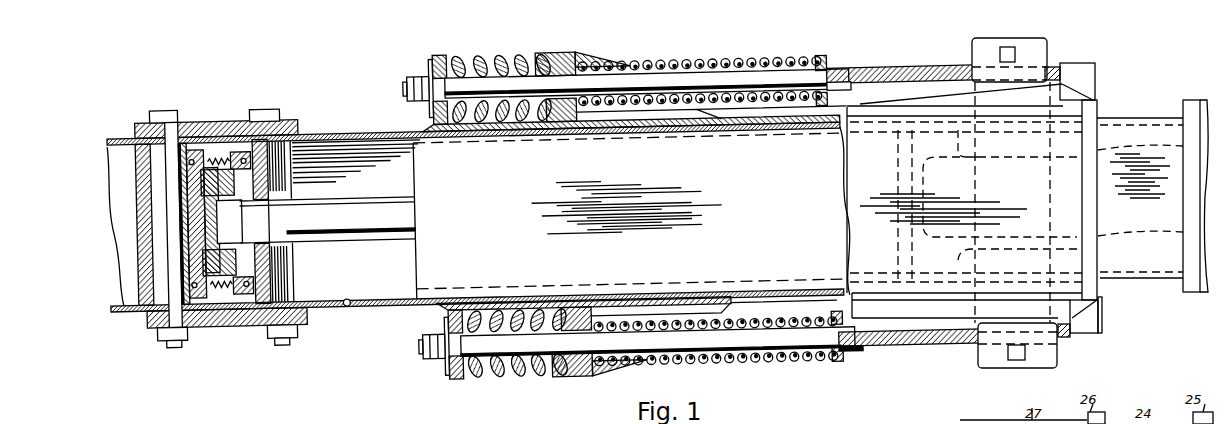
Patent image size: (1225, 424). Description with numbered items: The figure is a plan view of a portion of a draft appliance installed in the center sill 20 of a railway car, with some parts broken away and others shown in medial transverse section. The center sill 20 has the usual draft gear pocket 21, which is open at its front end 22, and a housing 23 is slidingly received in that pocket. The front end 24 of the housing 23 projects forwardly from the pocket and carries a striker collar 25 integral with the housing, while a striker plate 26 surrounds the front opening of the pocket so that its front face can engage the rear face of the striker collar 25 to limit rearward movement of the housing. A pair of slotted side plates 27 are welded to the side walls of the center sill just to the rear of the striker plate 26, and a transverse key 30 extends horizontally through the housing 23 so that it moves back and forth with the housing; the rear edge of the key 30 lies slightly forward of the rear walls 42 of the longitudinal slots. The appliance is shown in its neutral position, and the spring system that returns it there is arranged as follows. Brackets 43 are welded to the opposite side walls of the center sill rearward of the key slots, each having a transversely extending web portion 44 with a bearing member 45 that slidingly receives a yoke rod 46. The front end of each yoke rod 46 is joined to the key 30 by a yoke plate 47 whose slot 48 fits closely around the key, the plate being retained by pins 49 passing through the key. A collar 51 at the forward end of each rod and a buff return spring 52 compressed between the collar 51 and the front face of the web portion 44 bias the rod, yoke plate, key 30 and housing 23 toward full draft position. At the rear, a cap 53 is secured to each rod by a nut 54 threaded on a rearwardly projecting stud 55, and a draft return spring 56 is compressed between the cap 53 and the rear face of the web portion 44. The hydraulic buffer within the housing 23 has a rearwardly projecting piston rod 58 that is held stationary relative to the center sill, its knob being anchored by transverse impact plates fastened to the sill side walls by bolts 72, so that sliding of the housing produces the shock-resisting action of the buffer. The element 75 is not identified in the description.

The center sill 20 is at (346, 140).
The draft gear pocket 21 is at (345, 312).
The front end 22 is at (1102, 289).
The housing 23 is at (413, 268).
The front end 24 is at (1147, 118).
The striker collar 25 is at (1202, 293).
The striker plate 26 is at (1100, 113).
The slotted side plates 27 is at (1068, 108).
The transverse key 30 is at (987, 369).
The rear walls 42 is at (897, 121).
The brackets 43 is at (580, 73).
The web portion 44 is at (628, 370).
The bearing member 45 is at (557, 386).
The yoke rod 46 is at (665, 377).
The yoke plate 47 is at (920, 364).
The slot 48 is at (977, 346).
The pins 49 is at (1007, 47).
The collar 51 is at (838, 378).
The buff return spring 52 is at (708, 374).
The cap 53 is at (456, 392).
The nut 54 is at (437, 371).
The stud 55 is at (419, 354).
The draft return spring 56 is at (512, 389).
The piston rod 58 is at (333, 205).
The bolts 72 is at (178, 351).
The valve body 75 is at (898, 157).